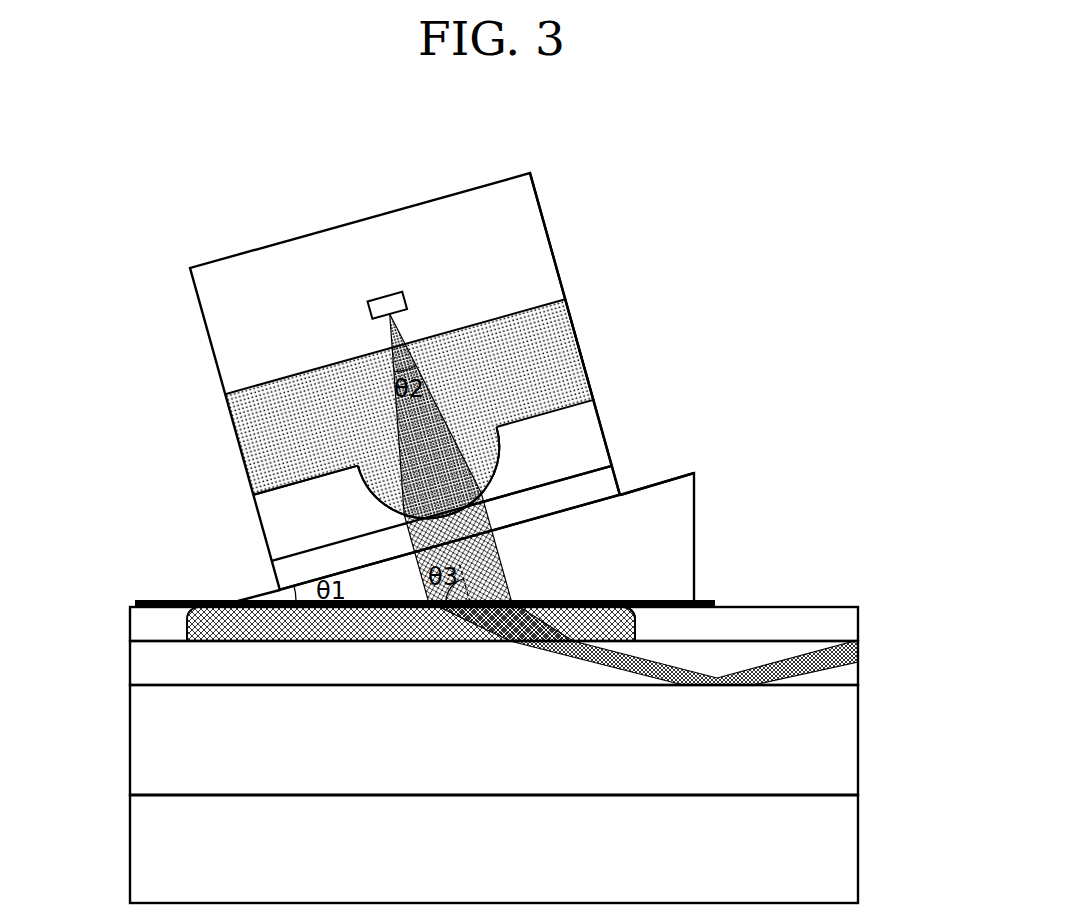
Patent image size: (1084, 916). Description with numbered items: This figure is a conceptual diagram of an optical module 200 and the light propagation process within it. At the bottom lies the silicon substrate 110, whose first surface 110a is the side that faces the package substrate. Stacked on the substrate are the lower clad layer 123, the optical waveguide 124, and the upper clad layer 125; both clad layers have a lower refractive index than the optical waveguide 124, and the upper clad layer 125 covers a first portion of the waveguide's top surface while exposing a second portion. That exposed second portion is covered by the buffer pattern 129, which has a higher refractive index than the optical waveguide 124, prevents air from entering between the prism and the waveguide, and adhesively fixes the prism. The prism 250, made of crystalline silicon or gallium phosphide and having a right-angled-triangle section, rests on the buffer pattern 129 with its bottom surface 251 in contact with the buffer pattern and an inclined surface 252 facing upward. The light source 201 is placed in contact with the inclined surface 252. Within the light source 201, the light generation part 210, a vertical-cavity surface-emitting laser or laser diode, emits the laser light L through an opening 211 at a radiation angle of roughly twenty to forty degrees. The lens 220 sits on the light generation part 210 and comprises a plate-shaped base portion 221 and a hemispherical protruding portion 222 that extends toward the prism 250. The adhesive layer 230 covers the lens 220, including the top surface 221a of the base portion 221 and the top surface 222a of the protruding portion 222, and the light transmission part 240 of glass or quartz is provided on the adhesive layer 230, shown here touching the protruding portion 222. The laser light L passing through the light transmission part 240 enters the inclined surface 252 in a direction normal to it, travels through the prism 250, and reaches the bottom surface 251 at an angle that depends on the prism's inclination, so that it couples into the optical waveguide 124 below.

The light source module 200 is at (193, 407).
The light generation part 210 is at (213, 312).
The light source 201 is at (572, 318).
The opening 211 is at (402, 297).
The lens 220 is at (677, 345).
The base portion 221 is at (587, 362).
The protruding portion 222 is at (497, 430).
The top surface of the base portion 221a is at (287, 492).
The top surface of the protruding portion 222a is at (393, 495).
The adhesive layer 230 is at (280, 550).
The light transmission part 240 is at (610, 480).
The prism 250 is at (680, 572).
The bottom surface of the prism 251 is at (673, 632).
The inclined surface of the prism 252 is at (677, 472).
The laser light L is at (497, 568).
The silicon substrate 110 is at (847, 848).
The first surface 110a is at (845, 795).
The lower clad layer 123 is at (847, 738).
The optical waveguide 124 is at (142, 662).
The upper clad layer 125 is at (142, 615).
The buffer pattern 129 is at (200, 628).